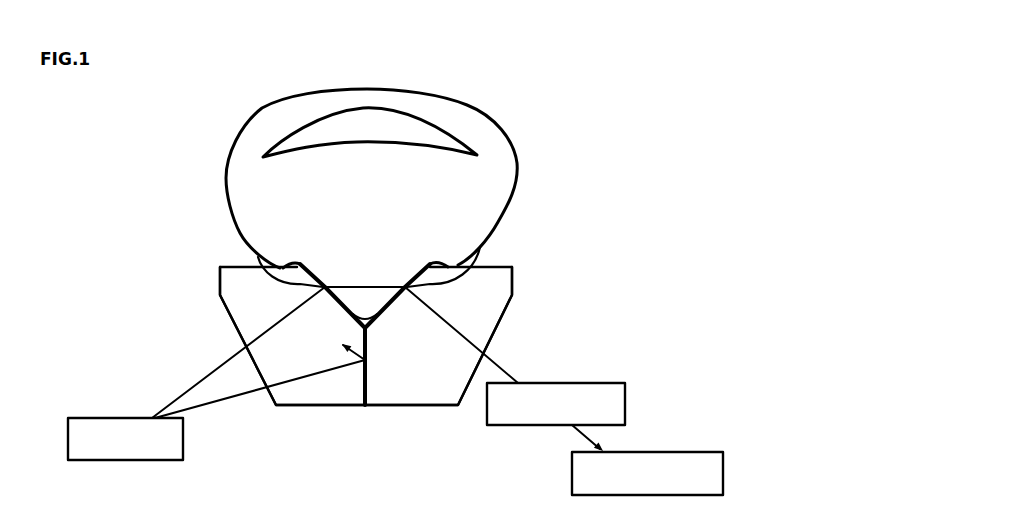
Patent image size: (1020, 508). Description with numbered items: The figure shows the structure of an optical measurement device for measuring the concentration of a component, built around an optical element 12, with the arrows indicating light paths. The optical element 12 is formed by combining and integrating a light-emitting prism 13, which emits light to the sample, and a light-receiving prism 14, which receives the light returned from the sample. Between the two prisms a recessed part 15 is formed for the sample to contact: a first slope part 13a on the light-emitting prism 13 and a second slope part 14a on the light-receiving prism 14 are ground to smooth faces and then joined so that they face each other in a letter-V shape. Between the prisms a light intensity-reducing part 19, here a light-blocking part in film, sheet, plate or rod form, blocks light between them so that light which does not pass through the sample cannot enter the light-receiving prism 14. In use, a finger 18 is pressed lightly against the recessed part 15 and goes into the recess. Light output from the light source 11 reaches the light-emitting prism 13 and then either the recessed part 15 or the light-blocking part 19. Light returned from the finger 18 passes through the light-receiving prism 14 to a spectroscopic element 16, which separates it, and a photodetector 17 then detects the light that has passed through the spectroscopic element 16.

The light source 11 is at (113, 422).
The optical element 12 is at (413, 410).
The light-emitting prism 13 is at (250, 312).
The first slope part 13a is at (264, 278).
The light-receiving prism 14 is at (483, 307).
The second slope part 14a is at (458, 281).
The recessed part 15 is at (352, 285).
The spectroscopic element 16 is at (583, 388).
The photodetector 17 is at (658, 459).
The finger 18 is at (488, 180).
The light intensity-reducing part 19 is at (367, 377).